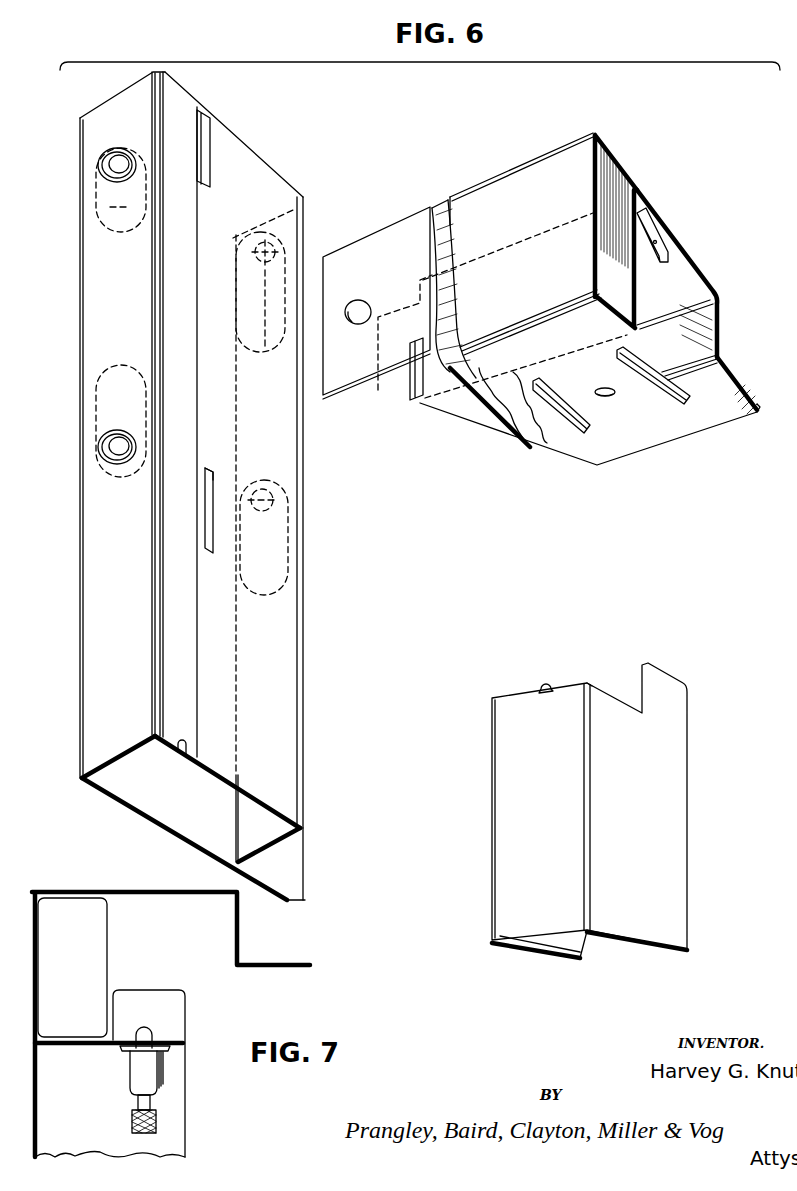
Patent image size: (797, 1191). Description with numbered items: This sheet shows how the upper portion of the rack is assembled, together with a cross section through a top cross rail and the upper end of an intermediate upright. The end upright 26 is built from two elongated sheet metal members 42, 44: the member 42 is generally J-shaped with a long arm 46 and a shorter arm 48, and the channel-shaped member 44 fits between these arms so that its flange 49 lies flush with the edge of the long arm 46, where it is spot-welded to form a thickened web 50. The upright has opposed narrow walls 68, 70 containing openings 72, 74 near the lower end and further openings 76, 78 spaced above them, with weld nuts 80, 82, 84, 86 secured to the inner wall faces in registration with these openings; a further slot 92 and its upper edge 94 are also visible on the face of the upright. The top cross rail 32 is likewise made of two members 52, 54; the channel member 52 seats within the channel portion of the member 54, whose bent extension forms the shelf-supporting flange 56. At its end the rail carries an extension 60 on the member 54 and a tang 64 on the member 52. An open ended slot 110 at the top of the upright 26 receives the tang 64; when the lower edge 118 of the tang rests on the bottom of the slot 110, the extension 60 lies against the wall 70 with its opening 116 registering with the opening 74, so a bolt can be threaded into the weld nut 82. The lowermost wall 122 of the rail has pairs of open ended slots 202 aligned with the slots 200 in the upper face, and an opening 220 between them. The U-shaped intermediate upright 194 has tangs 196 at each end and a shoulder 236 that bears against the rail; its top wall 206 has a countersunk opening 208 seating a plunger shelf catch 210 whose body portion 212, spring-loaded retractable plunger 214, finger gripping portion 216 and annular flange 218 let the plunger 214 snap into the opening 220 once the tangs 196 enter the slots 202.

In FIG. 6, the end upright 26 is at (100, 538).
In FIG. 6, the top cross rail 32 is at (670, 243).
In FIG. 7, the top cross rail 32 is at (48, 890).
In FIG. 6, the sheet metal member 42 is at (147, 805).
In FIG. 6, the sheet metal member 44 is at (290, 793).
In FIG. 6, the long arm 46 is at (112, 797).
In FIG. 6, the arm 48 is at (178, 756).
In FIG. 6, the flange 49 is at (297, 855).
In FIG. 6, the thickened web 50 is at (305, 567).
In FIG. 6, the sheet metal member 52 is at (635, 262).
In FIG. 6, the sheet metal member 54 is at (640, 193).
In FIG. 6, the shelf-supporting flange 56 is at (750, 407).
In FIG. 6, the extension 60 is at (338, 248).
In FIG. 6, the tang 64 is at (393, 397).
In FIG. 6, the narrow wall 68 is at (252, 820).
In FIG. 6, the narrow wall 70 is at (97, 112).
In FIG. 6, the opening 72 is at (269, 242).
In FIG. 6, the opening 74 is at (100, 163).
In FIG. 6, the opening 76 is at (283, 490).
In FIG. 6, the opening 78 is at (100, 452).
In FIG. 6, the weld nut 80 is at (265, 362).
In FIG. 6, the weld nut 82 is at (97, 208).
In FIG. 6, the weld nut 84 is at (275, 540).
In FIG. 6, the weld nut 86 is at (100, 405).
In FIG. 6, the slot 92 is at (205, 508).
In FIG. 6, the slot edge 94 is at (212, 470).
In FIG. 6, the open ended slot 110 is at (208, 148).
In FIG. 6, the opening 116 is at (357, 303).
In FIG. 6, the lower edge 118 is at (410, 400).
In FIG. 6, the lowermost wall 122 is at (660, 378).
In FIG. 7, the lowermost wall 122 is at (123, 1040).
In FIG. 6, the intermediate upright 194 is at (684, 780).
In FIG. 7, the intermediate upright 194 is at (185, 1157).
In FIG. 6, the tang 196 is at (660, 680).
In FIG. 7, the tang 196 is at (126, 992).
In FIG. 6, the slot 200 is at (653, 243).
In FIG. 6, the open ended slot 202 is at (620, 360).
In FIG. 7, the top wall 206 is at (73, 1050).
In FIG. 7, the countersunk opening 208 is at (163, 1058).
In FIG. 7, the plunger shelf catch 210 is at (165, 1080).
In FIG. 7, the body portion 212 is at (137, 1075).
In FIG. 7, the retractable plunger 214 is at (157, 1033).
In FIG. 7, the finger gripping portion 216 is at (158, 1123).
In FIG. 7, the annular flange 218 is at (167, 1047).
In FIG. 6, the opening 220 is at (605, 398).
In FIG. 6, the shoulder 236 is at (607, 691).